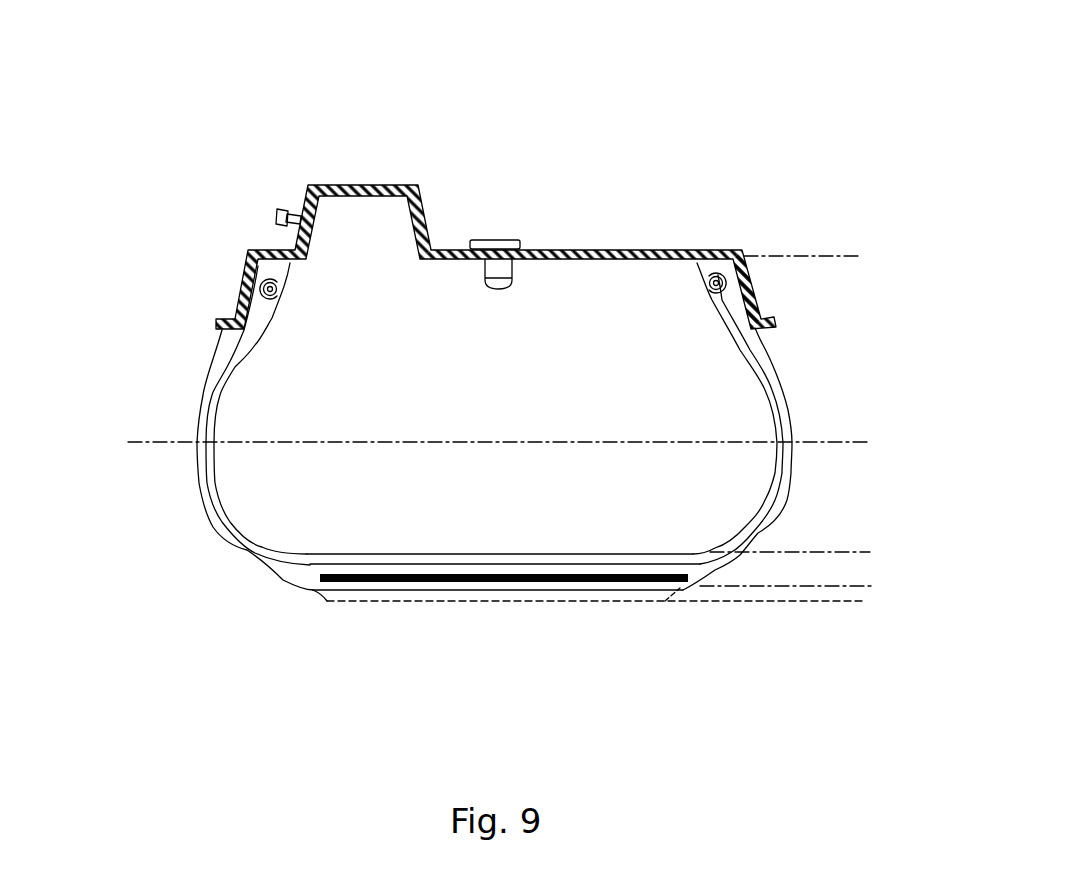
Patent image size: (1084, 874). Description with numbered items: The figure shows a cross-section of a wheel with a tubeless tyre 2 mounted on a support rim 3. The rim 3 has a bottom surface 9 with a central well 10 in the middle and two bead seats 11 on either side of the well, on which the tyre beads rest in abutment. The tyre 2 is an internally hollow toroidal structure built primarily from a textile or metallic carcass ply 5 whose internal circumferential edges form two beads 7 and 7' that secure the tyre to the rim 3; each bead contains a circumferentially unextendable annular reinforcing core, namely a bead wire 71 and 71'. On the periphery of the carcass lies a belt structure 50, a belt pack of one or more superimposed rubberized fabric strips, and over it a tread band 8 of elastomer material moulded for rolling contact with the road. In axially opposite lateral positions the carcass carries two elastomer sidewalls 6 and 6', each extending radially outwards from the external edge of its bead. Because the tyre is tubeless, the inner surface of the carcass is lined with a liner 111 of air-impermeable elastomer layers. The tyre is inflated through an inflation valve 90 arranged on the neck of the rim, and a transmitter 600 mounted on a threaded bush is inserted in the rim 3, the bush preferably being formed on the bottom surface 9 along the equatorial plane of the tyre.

The tyre 2 is at (792, 448).
The support rim 3 is at (450, 249).
The carcass ply 5 is at (227, 525).
The sidewall 6 is at (184, 426).
The sidewall 6' is at (798, 426).
The bead 7 is at (227, 249).
The bead 7' is at (820, 289).
The tread band 8 is at (502, 593).
The bottom surface 9 is at (653, 250).
The central well 10 is at (373, 185).
The bead seat 11 is at (277, 252).
The belt structure 50 is at (320, 578).
The bead wire 71 is at (327, 315).
The bead wire 71' is at (656, 313).
The inflation valve 90 is at (290, 211).
The liner 111 is at (440, 553).
The transmitter 600 is at (522, 242).